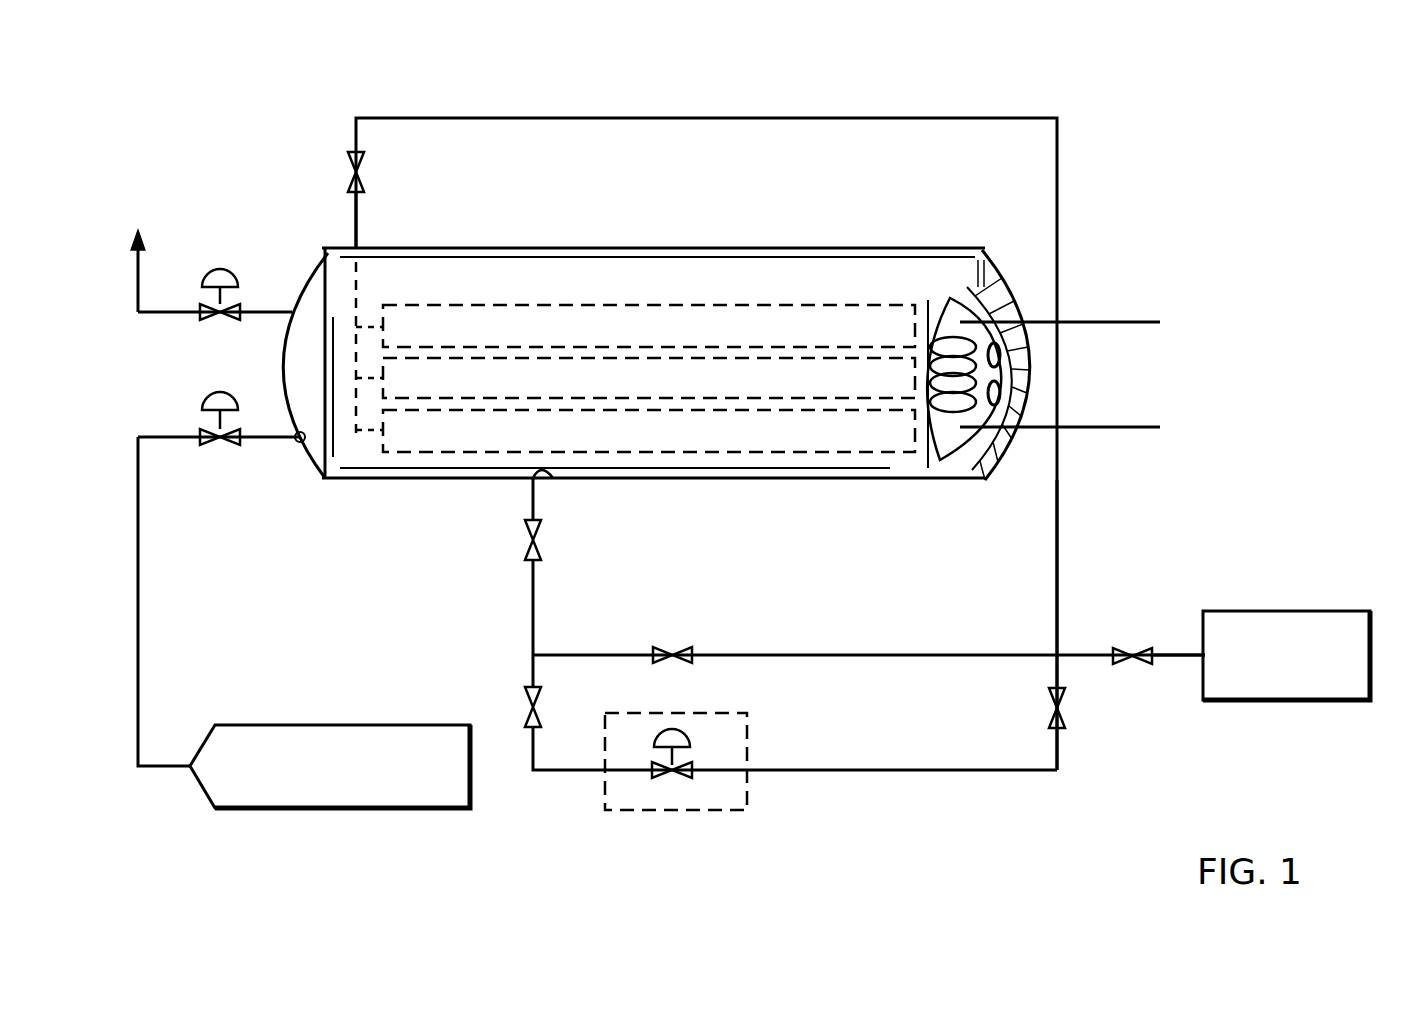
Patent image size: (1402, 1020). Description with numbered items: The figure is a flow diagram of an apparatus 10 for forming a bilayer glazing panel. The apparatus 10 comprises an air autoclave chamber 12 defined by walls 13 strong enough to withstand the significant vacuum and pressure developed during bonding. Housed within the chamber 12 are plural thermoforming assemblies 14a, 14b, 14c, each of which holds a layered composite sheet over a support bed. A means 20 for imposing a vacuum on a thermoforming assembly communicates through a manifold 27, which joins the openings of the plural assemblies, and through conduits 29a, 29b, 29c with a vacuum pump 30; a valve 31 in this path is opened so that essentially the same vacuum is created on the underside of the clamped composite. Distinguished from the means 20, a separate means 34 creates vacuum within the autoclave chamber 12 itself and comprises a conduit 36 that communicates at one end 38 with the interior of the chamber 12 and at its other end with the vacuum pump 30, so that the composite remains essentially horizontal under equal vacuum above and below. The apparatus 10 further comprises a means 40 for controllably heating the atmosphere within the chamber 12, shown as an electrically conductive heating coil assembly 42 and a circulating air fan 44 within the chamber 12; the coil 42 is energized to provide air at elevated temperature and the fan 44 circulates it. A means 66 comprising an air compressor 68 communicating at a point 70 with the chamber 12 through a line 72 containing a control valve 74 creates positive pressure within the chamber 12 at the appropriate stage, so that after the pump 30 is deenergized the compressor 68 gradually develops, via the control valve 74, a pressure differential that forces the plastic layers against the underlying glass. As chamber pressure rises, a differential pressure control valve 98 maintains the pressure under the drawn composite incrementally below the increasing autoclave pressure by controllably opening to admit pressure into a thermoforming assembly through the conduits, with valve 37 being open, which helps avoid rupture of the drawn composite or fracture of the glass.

The apparatus 10 is at (404, 893).
The air autoclave chamber 12 is at (343, 248).
The walls 13 is at (998, 462).
The thermoforming assembly 14a is at (470, 305).
The thermoforming assembly 14b is at (380, 360).
The thermoforming assembly 14c is at (430, 455).
The means for imposing a vacuum on a thermoforming assembly 20 is at (1175, 596).
The manifold 27 is at (354, 278).
The conduit 29a is at (358, 223).
The conduit 29b is at (1018, 118).
The conduit 29c is at (1057, 562).
The vacuum pump 30 is at (1278, 611).
The valve 31 is at (348, 162).
The means for creating vacuum within autoclave chamber 34 is at (472, 560).
The conduit 36 is at (531, 620).
The valve 37 is at (541, 548).
The end opening 38 is at (548, 470).
The means for controllably heating the atmosphere 40 is at (1038, 228).
The heating coil assembly 42 is at (928, 455).
The circulating air fan 44 is at (1010, 307).
The means for creating positive pressure 66 is at (228, 668).
The air compressor 68 is at (298, 725).
The communication point 70 is at (298, 442).
The line 72 is at (140, 508).
The control valve 74 is at (228, 448).
The differential pressure control valve 98 is at (689, 732).